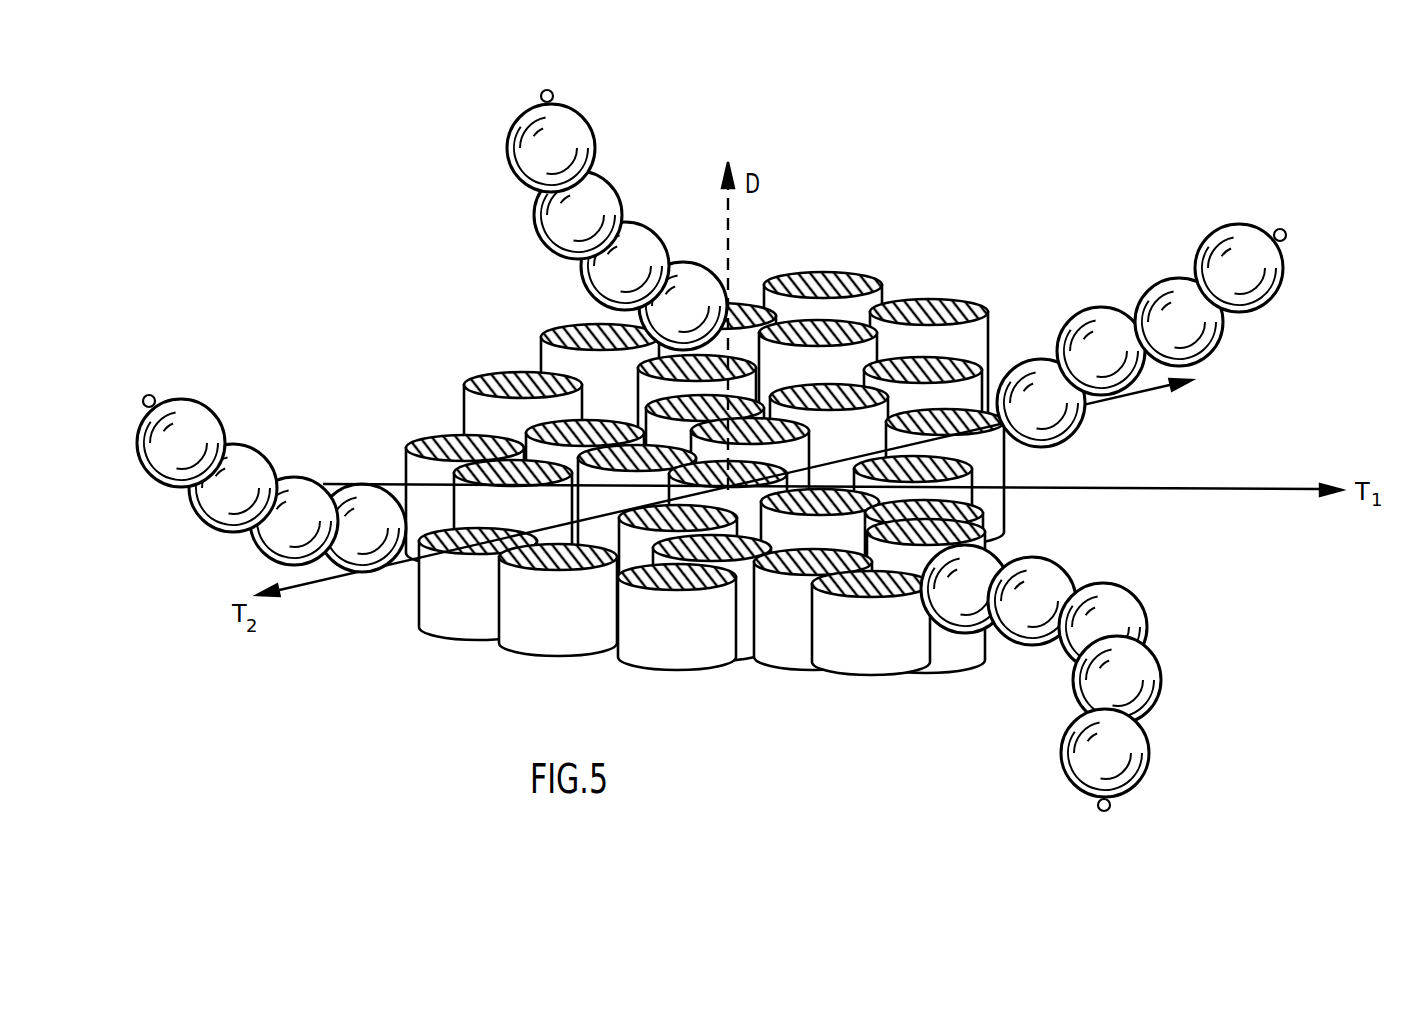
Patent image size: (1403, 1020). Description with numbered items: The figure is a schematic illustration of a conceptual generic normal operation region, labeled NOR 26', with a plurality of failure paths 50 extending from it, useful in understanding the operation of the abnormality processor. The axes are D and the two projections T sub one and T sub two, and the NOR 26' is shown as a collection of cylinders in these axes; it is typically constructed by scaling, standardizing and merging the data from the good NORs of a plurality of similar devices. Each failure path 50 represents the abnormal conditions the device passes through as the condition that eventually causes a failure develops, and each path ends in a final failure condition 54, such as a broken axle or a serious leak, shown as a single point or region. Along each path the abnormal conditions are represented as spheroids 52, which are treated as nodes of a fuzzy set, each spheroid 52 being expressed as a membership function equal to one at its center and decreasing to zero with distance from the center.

The generic normal operation region (NOR) 26' is at (705, 445).
The failure path 50 is at (701, 433).
The spheroid 52 is at (508, 148).
The failure condition 54 is at (547, 90).